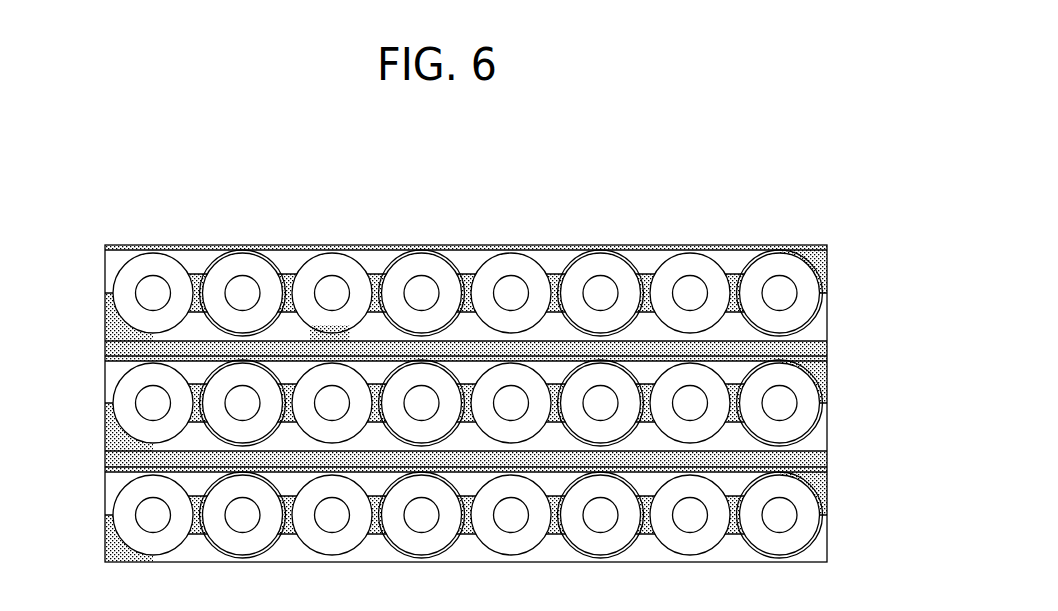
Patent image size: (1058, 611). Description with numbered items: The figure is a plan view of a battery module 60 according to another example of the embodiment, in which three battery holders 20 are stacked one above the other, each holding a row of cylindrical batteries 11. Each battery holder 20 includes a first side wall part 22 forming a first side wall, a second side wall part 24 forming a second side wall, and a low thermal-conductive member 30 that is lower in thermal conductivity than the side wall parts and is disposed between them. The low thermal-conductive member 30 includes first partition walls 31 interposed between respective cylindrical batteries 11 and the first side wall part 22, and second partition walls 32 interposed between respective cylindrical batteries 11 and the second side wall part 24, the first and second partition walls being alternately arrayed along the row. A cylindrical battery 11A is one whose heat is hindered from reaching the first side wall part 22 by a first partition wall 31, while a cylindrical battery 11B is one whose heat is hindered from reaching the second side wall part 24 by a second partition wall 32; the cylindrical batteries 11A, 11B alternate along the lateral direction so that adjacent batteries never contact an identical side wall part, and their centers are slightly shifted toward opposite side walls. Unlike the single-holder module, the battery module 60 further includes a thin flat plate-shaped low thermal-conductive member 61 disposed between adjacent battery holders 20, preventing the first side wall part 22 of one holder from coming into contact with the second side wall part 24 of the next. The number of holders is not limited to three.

The battery module 60 is at (799, 133).
The low thermal-conductive member 61 is at (105, 349).
The battery holder 20 is at (514, 380).
The second side wall part 24 is at (766, 249).
The low thermal-conductive member 30 is at (828, 277).
The first side wall part 22 is at (817, 331).
The cylindrical battery 11 is at (456, 365).
The cylindrical battery 11A is at (147, 262).
The cylindrical battery 11B is at (250, 263).
The first partition wall 31 is at (327, 336).
The second partition wall 32 is at (418, 253).